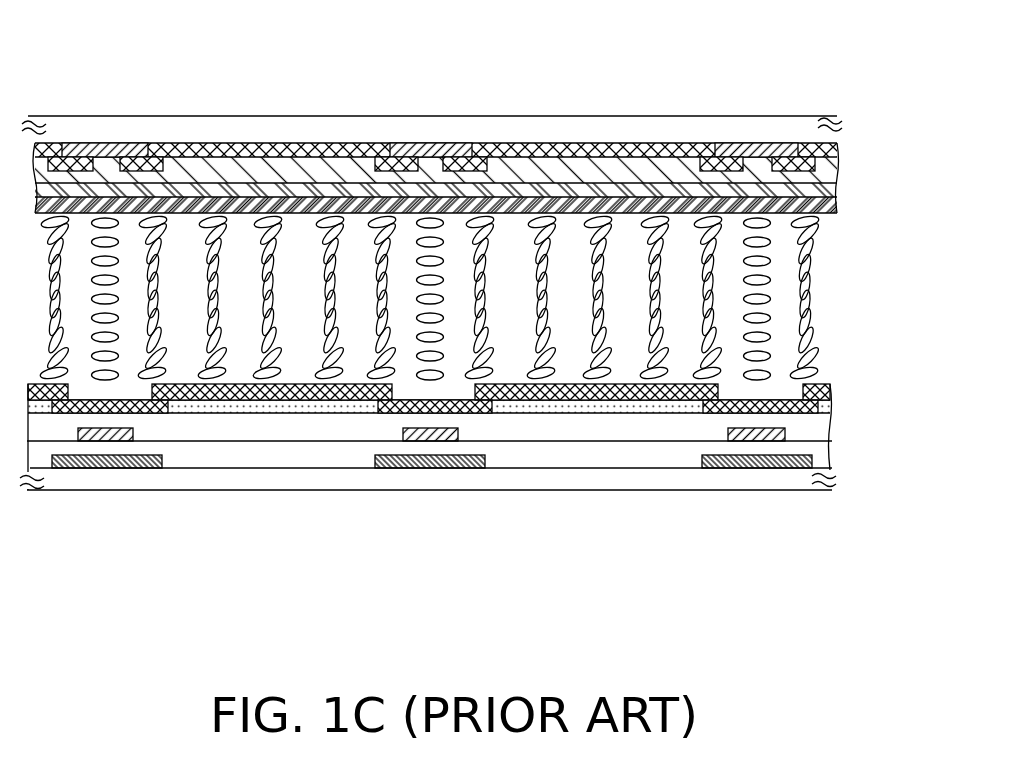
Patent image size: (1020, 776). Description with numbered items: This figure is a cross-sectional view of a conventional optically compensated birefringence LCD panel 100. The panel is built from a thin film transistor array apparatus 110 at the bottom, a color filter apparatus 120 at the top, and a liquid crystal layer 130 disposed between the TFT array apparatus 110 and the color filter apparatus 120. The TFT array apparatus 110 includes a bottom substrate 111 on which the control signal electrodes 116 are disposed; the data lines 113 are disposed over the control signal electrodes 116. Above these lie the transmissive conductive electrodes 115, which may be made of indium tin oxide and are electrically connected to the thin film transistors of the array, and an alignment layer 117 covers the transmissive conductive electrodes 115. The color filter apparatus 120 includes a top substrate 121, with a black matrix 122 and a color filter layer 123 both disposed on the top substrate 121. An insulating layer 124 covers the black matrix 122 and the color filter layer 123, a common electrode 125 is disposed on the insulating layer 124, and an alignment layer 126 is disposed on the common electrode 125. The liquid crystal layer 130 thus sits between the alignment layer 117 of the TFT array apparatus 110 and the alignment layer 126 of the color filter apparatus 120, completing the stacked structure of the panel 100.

The optically compensated birefringence LCD panel 100 is at (466, 305).
The thin film transistor array apparatus 110 is at (466, 478).
The bottom substrate 111 is at (115, 482).
The data lines 113 is at (117, 427).
The transmissive conductive electrodes 115 is at (278, 405).
The control signal electrodes 116 is at (60, 467).
The alignment layer 117 is at (548, 400).
The color filter apparatus 120 is at (467, 124).
The top substrate 121 is at (100, 127).
The black matrix 122 is at (431, 145).
The color filter layer 123 is at (522, 150).
The insulating layer 124 is at (603, 168).
The common electrode 125 is at (192, 190).
The alignment layer 126 is at (260, 203).
The liquid crystal layer 130 is at (790, 276).